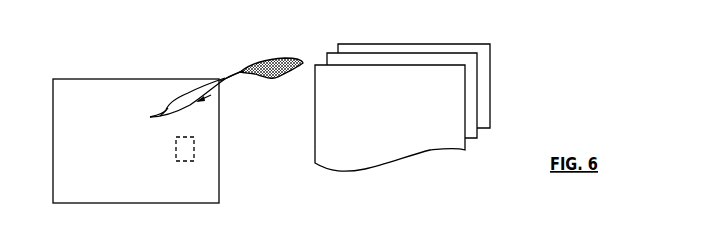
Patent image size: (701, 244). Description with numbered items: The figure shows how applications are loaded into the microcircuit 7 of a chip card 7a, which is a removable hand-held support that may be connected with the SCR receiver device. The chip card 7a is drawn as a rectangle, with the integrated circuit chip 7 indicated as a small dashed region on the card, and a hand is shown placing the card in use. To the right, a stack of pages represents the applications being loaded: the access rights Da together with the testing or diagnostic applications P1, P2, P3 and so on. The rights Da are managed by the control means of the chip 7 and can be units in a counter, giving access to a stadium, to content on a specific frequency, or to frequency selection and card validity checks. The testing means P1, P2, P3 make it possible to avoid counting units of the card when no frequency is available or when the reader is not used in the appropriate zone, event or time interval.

The microcircuit 7 is at (176, 148).
The chip card 7a is at (134, 79).
The access right application Da is at (402, 107).
The testing means P1 is at (390, 118).
The testing means P2 is at (402, 95).
The test or diagnostic application P3 is at (414, 86).